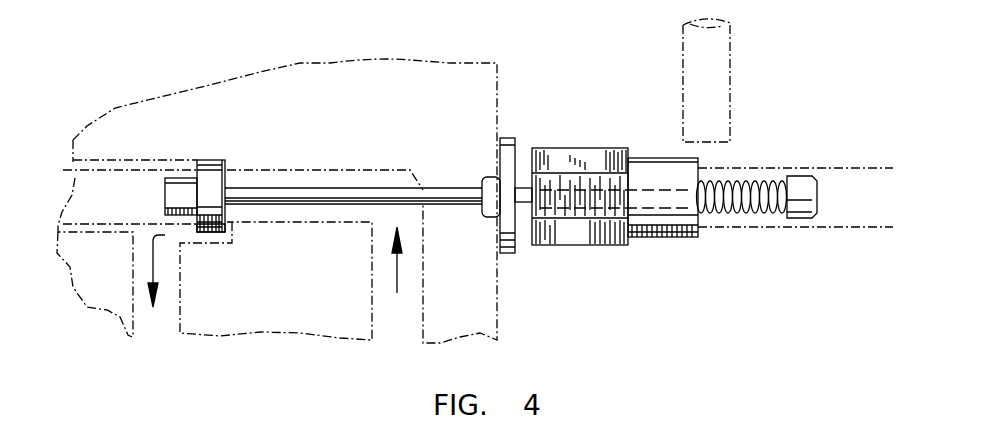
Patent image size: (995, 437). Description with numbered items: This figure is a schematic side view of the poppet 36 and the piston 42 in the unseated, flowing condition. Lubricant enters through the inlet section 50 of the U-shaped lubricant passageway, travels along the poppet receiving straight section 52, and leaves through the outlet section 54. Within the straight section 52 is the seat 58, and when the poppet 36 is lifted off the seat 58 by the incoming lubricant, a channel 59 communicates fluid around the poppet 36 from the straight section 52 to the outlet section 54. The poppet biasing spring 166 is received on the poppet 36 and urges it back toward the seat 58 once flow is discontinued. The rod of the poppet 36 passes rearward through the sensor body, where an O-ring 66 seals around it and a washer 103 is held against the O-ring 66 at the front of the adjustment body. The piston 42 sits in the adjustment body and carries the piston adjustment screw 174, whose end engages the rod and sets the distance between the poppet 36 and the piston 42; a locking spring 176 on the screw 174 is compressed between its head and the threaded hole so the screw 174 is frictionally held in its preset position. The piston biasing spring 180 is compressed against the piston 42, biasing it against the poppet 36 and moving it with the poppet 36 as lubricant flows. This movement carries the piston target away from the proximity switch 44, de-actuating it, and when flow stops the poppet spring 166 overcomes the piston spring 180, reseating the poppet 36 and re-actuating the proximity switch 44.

The poppet biasing spring 166 is at (113, 167).
The poppet 36 is at (212, 160).
The seat 58 is at (230, 228).
The channel 59 is at (207, 235).
The poppet receiving straight section 52 is at (308, 183).
The O-ring 66 is at (487, 177).
The washer 103 is at (563, 40).
The piston 42 is at (583, 148).
The proximity switch 44 is at (732, 58).
The piston adjustment screw 174 is at (800, 175).
The locking spring 176 is at (733, 213).
The piston biasing spring 180 is at (828, 228).
The outlet section 54 is at (160, 327).
The inlet section 50 is at (397, 330).